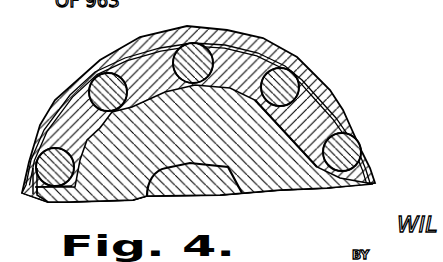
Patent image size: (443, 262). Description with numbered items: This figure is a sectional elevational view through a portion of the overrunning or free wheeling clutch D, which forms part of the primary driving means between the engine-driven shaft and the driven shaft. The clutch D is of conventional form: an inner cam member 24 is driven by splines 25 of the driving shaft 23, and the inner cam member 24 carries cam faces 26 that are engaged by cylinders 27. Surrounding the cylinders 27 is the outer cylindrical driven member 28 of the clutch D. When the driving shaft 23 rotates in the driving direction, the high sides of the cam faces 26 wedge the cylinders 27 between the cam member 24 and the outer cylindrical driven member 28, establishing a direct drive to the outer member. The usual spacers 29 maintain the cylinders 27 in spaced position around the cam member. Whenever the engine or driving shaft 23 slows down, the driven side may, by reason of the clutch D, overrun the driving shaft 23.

The driving shaft 23 is at (208, 191).
The inner cam member 24 is at (279, 185).
The splines 25 is at (147, 197).
The cam faces 26 is at (180, 116).
The cylinders 27 is at (204, 50).
The outer cylindrical driven member 28 is at (300, 63).
The spacers 29 is at (257, 64).
The overrunning or free wheeling clutch D is at (354, 90).